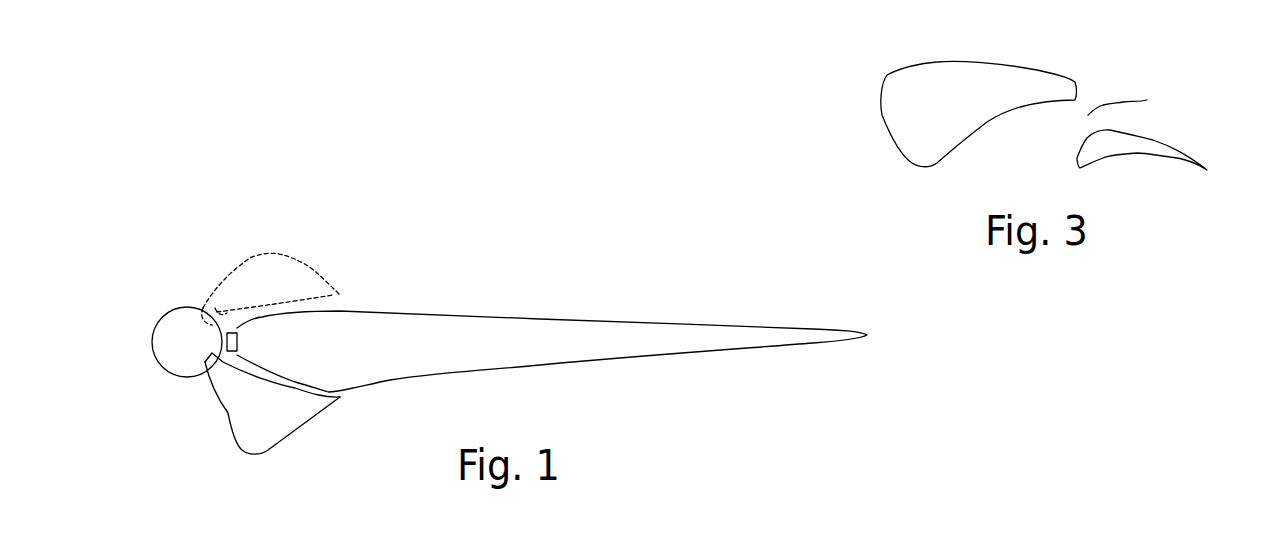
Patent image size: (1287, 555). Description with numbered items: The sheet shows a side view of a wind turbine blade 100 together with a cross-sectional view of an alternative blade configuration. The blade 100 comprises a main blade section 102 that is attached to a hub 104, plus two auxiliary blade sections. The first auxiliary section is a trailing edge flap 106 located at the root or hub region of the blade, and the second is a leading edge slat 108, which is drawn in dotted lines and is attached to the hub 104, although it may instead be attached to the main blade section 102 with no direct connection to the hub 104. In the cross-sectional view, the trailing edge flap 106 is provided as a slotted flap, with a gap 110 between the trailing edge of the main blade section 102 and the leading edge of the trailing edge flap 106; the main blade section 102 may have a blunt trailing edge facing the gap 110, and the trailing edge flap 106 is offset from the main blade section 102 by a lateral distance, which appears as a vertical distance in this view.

In FIG. 1, the blade 100 is at (229, 240).
In FIG. 1, the main blade section 102 is at (625, 343).
In FIG. 3, the main blade section 102 is at (1017, 78).
In FIG. 1, the hub 104 is at (173, 350).
In FIG. 1, the trailing edge flap 106 is at (278, 412).
In FIG. 3, the trailing edge flap 106 is at (1163, 145).
In FIG. 1, the leading edge slat 108 is at (303, 277).
In FIG. 3, the gap 110 is at (1160, 87).